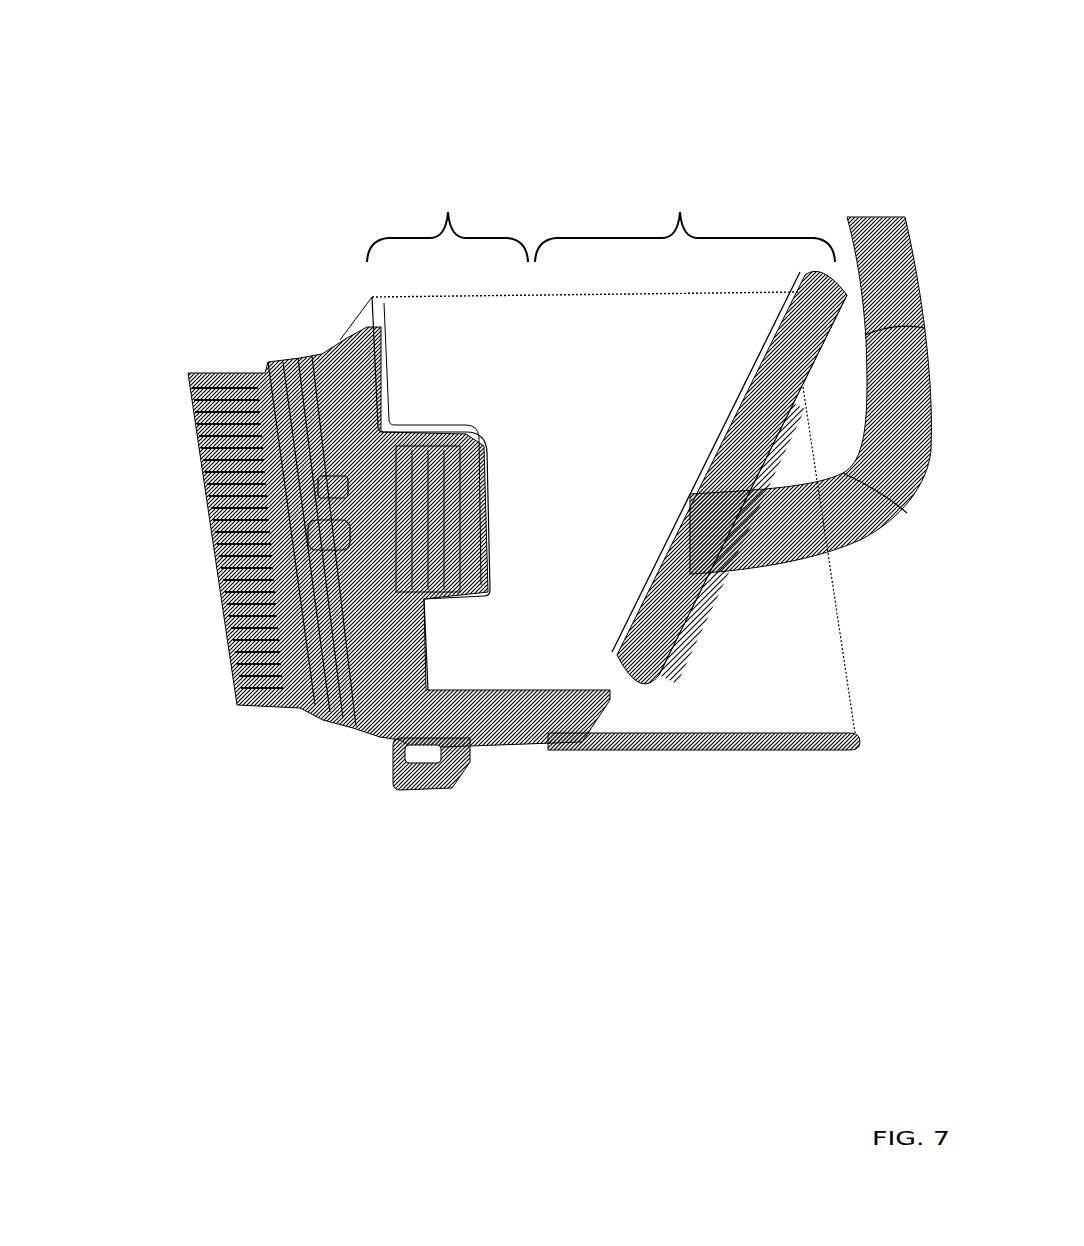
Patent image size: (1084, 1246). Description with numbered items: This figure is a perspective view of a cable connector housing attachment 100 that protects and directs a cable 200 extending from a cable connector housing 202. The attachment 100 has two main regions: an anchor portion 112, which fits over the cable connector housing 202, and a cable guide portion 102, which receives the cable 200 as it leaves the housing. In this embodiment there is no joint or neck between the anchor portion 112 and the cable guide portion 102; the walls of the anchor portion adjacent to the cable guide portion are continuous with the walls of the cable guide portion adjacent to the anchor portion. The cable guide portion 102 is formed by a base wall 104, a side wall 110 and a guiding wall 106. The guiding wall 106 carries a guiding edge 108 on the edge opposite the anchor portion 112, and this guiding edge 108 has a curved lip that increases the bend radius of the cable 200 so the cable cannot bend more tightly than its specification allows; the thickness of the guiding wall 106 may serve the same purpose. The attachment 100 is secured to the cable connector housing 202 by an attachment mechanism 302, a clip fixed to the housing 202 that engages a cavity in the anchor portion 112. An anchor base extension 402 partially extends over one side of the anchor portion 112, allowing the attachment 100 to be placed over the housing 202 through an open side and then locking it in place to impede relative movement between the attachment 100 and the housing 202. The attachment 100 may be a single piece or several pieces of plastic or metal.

The cable connector housing attachment 100 is at (533, 413).
The cable guide portion 102 is at (533, 479).
The base wall 104 is at (345, 323).
The guiding wall 106 is at (636, 482).
The guiding edge 108 is at (680, 580).
The side wall 110 is at (704, 601).
The anchor portion 112 is at (461, 199).
The cable 200 is at (823, 515).
The cable connector housing 202 is at (326, 541).
The attachment mechanism 302 is at (432, 520).
The anchor base extension 402 is at (427, 777).